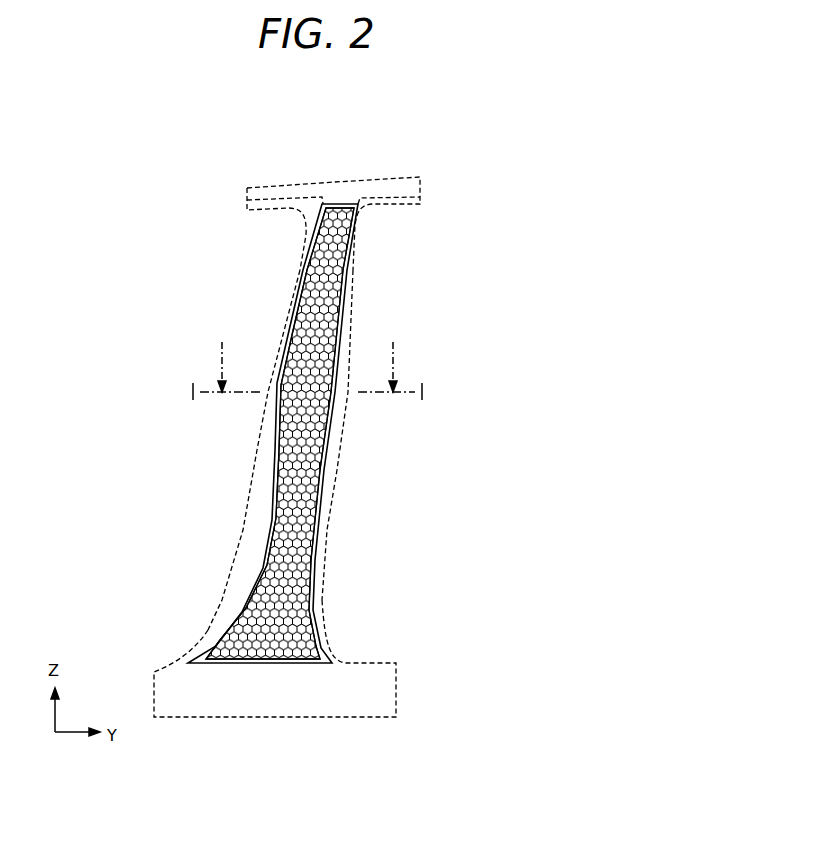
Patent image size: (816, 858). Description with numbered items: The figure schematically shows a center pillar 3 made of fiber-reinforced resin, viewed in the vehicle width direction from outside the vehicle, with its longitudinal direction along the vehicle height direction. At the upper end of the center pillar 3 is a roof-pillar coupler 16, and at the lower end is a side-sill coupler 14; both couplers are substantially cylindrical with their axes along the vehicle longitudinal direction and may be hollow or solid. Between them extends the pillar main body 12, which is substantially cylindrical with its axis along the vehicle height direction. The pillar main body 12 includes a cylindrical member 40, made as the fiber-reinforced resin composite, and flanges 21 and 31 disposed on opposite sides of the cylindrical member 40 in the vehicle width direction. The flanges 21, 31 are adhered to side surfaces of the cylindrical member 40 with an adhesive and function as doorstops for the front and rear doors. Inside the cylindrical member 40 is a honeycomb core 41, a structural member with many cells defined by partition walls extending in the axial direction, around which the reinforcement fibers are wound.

The center pillar 3 is at (390, 147).
The roof-pillar coupler 16 is at (414, 182).
The side-sill coupler 14 is at (398, 672).
The pillar main body 12 is at (365, 329).
The flange 21 is at (257, 520).
The flange 31 is at (333, 488).
The cylindrical member 40 is at (279, 490).
The honeycomb core 41 is at (280, 433).